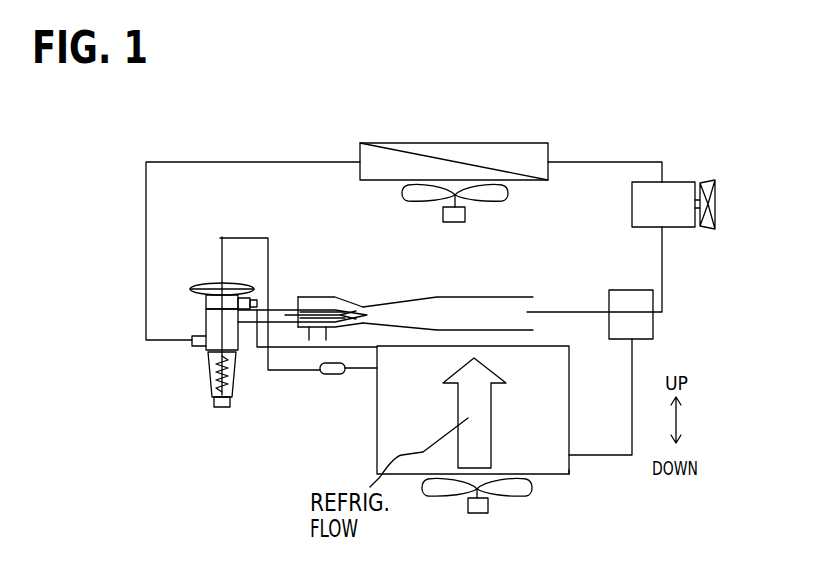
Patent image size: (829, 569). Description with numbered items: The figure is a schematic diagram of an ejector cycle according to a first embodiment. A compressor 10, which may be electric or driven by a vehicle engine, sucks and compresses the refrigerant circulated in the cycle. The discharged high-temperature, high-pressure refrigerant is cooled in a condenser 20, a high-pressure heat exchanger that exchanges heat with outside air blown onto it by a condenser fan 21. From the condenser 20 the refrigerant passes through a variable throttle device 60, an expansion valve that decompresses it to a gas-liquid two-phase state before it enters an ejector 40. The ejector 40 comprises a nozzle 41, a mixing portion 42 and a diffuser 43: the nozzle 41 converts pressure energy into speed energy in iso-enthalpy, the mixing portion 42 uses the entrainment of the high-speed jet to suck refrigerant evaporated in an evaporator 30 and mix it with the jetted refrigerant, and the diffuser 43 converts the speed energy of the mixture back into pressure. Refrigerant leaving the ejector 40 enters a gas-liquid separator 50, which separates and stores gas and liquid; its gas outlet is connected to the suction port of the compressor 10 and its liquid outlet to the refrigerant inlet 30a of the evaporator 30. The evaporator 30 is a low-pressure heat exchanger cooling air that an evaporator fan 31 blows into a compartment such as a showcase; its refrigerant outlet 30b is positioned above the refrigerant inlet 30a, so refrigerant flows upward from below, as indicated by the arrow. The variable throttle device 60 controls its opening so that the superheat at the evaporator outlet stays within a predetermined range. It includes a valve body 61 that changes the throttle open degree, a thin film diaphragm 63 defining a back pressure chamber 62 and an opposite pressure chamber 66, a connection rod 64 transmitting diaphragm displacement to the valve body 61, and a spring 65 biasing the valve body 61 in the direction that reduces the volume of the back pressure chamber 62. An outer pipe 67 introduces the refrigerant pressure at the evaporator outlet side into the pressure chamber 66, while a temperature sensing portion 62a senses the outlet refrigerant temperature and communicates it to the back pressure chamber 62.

The compressor 10 is at (677, 182).
The condenser 20 is at (550, 146).
The condenser fan 21 is at (504, 193).
The evaporator 30 is at (377, 391).
The refrigerant inlet 30a is at (570, 465).
The refrigerant outlet 30b is at (365, 363).
The evaporator fan 31 is at (512, 492).
The ejector 40 is at (391, 295).
The nozzle 41 is at (318, 297).
The mixing portion 42 is at (385, 322).
The diffuser 43 is at (440, 300).
The gas-liquid separator 50 is at (654, 330).
The variable throttle device 60 is at (205, 278).
The valve body 61 is at (205, 343).
The back pressure chamber 62 is at (228, 300).
The temperature sensing portion 62a is at (322, 377).
The thin film diaphragm 63 is at (202, 297).
The connection rod 64 is at (205, 322).
The spring 65 is at (207, 382).
The pressure chamber 66 is at (215, 284).
The outer pipe 67 is at (277, 350).